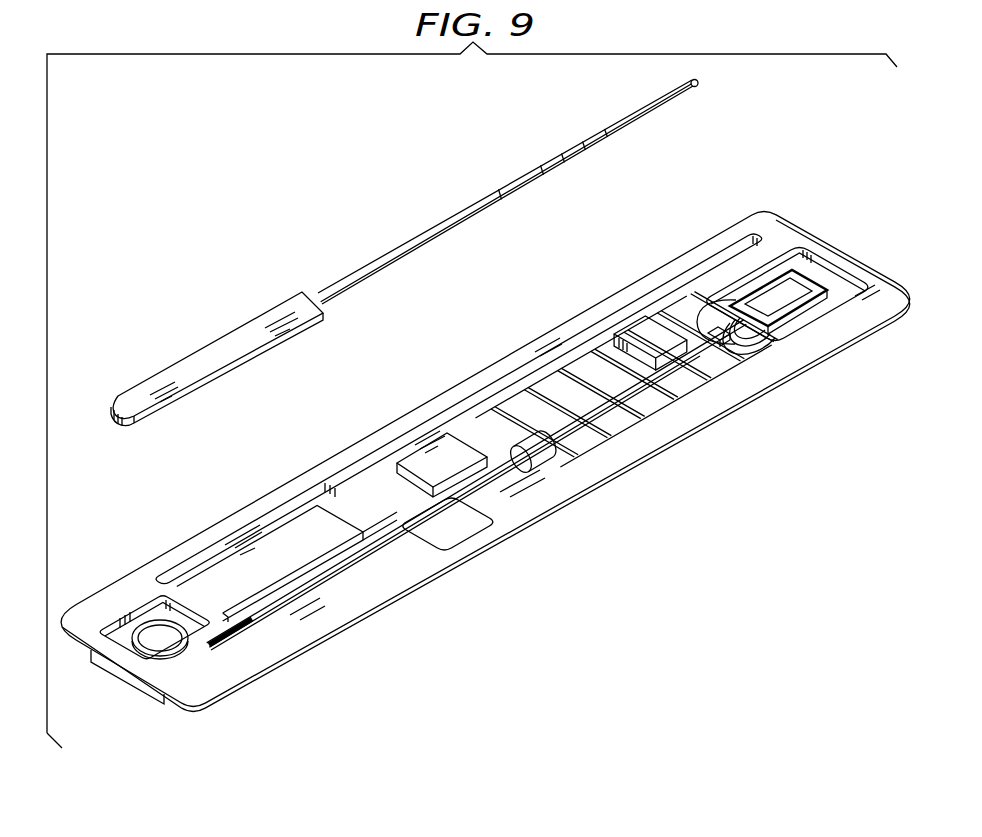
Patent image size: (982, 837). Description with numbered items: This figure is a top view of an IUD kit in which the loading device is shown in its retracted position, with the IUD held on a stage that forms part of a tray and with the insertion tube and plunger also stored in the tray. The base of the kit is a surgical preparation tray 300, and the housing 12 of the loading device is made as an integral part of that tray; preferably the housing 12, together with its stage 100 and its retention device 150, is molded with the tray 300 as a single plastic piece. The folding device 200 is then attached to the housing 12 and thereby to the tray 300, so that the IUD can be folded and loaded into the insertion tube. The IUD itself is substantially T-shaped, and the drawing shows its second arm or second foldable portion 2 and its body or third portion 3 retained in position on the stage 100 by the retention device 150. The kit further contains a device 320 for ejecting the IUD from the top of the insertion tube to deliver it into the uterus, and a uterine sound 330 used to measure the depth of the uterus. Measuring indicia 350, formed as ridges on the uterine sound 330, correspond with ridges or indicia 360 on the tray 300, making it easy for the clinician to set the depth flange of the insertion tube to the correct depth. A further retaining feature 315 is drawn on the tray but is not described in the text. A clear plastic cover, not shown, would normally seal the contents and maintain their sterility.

The prep tray 300 is at (113, 668).
The retaining block 315 is at (400, 530).
The device for ejecting the IUD 320 is at (183, 650).
The uterine sound 330 is at (207, 352).
The measuring indicia 350 is at (512, 188).
The indicia on the tray 360 is at (620, 440).
The stage 100 is at (712, 310).
The retention device 150 is at (758, 317).
The folding device 200 is at (813, 283).
The second foldable portion 2 is at (800, 332).
The third portion 3 is at (714, 331).
The housing 12 is at (730, 357).